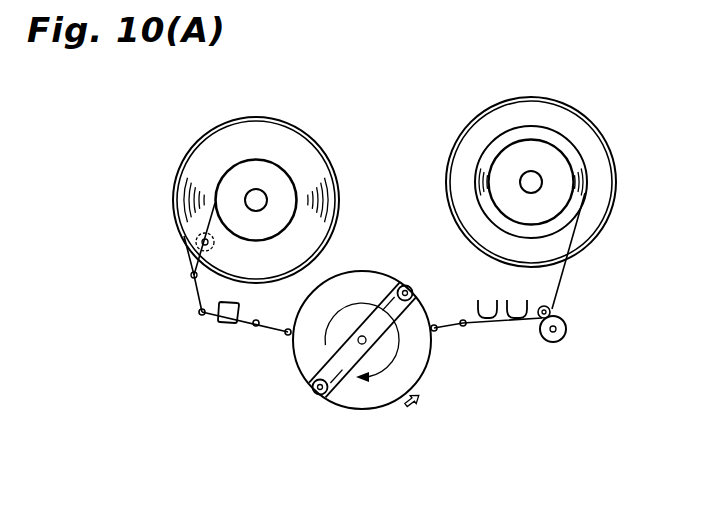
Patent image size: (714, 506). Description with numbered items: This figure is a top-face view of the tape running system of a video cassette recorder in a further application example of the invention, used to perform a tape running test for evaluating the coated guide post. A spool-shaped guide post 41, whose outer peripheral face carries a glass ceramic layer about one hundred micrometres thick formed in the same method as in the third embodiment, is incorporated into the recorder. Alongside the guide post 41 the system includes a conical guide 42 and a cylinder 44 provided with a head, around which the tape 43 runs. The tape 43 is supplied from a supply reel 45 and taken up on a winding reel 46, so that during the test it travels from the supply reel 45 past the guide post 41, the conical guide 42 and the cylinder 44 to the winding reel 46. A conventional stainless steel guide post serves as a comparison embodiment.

The guide post 41 is at (200, 314).
The conical guide 42 is at (288, 330).
The tape 43 is at (213, 321).
The cylinder provided with a head 44 is at (367, 272).
The supply reel 45 is at (307, 132).
The winding reel 46 is at (473, 113).